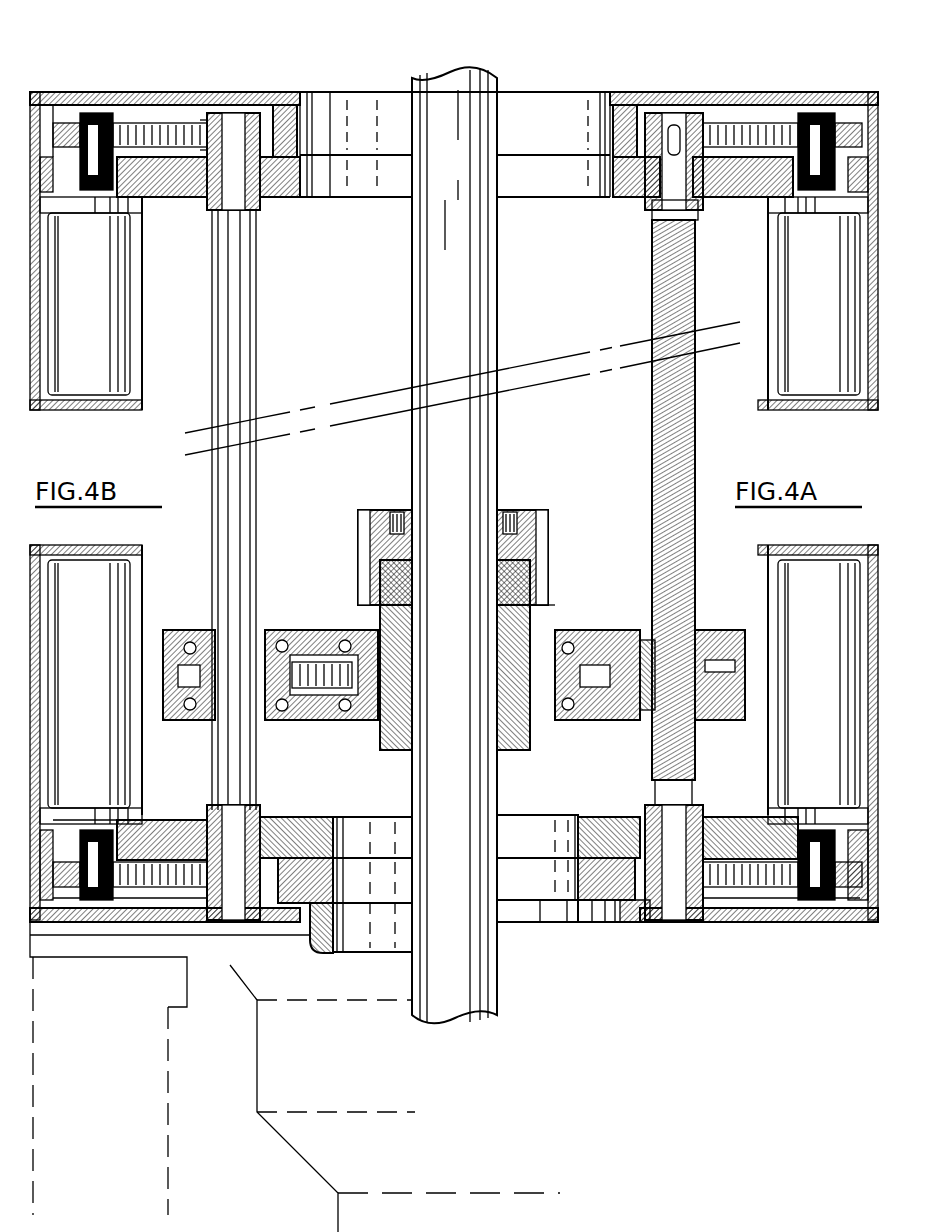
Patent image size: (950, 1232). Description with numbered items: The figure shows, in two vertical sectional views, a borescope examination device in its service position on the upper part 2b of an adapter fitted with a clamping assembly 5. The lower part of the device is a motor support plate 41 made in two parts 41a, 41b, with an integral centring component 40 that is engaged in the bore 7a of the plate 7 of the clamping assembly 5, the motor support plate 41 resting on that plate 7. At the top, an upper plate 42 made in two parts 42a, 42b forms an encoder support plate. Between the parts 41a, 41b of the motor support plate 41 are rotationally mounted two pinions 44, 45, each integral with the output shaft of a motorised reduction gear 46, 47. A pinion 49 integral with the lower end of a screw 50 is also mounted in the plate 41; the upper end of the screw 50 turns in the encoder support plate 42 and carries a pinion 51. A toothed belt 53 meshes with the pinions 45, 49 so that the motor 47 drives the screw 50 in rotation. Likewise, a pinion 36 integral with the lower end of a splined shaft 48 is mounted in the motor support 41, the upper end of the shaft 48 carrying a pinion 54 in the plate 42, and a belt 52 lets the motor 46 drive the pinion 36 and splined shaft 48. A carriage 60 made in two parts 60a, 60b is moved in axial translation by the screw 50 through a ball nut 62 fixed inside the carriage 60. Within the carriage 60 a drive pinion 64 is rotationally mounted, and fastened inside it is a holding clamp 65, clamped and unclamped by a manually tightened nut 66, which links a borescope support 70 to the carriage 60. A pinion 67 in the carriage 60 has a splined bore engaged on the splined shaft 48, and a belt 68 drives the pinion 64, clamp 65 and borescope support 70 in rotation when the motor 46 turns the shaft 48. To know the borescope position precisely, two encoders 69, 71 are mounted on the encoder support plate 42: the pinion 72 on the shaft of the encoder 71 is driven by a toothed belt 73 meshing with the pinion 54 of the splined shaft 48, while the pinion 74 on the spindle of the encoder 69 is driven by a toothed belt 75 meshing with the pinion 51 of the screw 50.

In FIG. 4B, the upper part of adapter 2b is at (270, 1178).
In FIG. 4B, the clamping assembly 5 is at (72, 1146).
In FIG. 4B, the plate 7 is at (170, 1068).
In FIG. 4B, the bore 7a is at (315, 935).
In FIG. 4B, the pinion 36 is at (225, 922).
In FIG. 4B, the centring component 40 is at (345, 940).
In FIG. 4B, the motor support plate 41 is at (175, 922).
In FIG. 4A, the motor support plate 41 is at (752, 935).
In FIG. 4B, the motor support plate part 41a is at (95, 922).
In FIG. 4A, the motor support plate part 41a is at (640, 922).
In FIG. 4B, the motor support plate part 41b is at (285, 825).
In FIG. 4B, the upper plate (encoder support plate) 42 is at (150, 88).
In FIG. 4A, the encoder support plate part 42a is at (830, 72).
In FIG. 4A, the encoder support plate part 42b is at (630, 200).
In FIG. 4B, the pinion 44 is at (80, 845).
In FIG. 4A, the pinion 45 is at (850, 900).
In FIG. 4B, the motorised reduction gear 46 is at (95, 605).
In FIG. 4A, the motorised reduction gear 47 is at (800, 610).
In FIG. 4B, the splined shaft 48 is at (248, 360).
In FIG. 4A, the pinion 49 is at (697, 900).
In FIG. 4A, the screw 50 is at (655, 530).
In FIG. 4A, the pinion 51 is at (663, 112).
In FIG. 4B, the belt 52 is at (150, 862).
In FIG. 4A, the toothed belt 53 is at (765, 898).
In FIG. 4B, the pinion 54 is at (265, 118).
In FIG. 4A, the carriage 60 is at (585, 610).
In FIG. 4A, the carriage part 60a is at (730, 722).
In FIG. 4A, the carriage part 60b is at (740, 630).
In FIG. 4A, the ball nut 62 is at (628, 708).
In FIG. 4B, the drive pinion 64 is at (368, 725).
In FIG. 4B, the holding clamp 65 is at (375, 590).
In FIG. 4B, the manually tightened nut 66 is at (370, 505).
In FIG. 4B, the pinion 67 is at (185, 630).
In FIG. 4B, the belt 68 is at (315, 660).
In FIG. 4A, the encoder 69 is at (815, 262).
In FIG. 4A, the borescope support 70 is at (482, 480).
In FIG. 4B, the encoder 71 is at (95, 292).
In FIG. 4B, the pinion 72 is at (66, 120).
In FIG. 4B, the toothed belt 73 is at (180, 125).
In FIG. 4A, the pinion 74 is at (775, 190).
In FIG. 4A, the toothed belt 75 is at (758, 122).